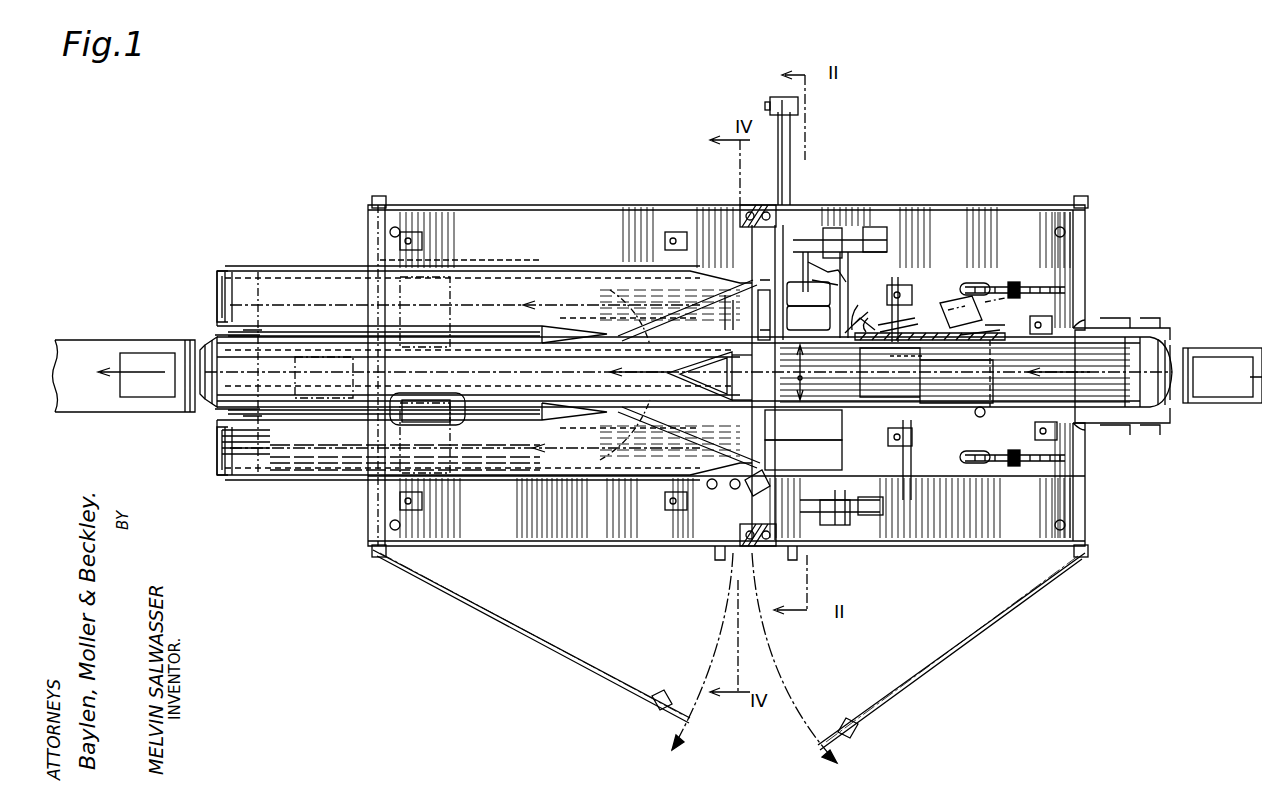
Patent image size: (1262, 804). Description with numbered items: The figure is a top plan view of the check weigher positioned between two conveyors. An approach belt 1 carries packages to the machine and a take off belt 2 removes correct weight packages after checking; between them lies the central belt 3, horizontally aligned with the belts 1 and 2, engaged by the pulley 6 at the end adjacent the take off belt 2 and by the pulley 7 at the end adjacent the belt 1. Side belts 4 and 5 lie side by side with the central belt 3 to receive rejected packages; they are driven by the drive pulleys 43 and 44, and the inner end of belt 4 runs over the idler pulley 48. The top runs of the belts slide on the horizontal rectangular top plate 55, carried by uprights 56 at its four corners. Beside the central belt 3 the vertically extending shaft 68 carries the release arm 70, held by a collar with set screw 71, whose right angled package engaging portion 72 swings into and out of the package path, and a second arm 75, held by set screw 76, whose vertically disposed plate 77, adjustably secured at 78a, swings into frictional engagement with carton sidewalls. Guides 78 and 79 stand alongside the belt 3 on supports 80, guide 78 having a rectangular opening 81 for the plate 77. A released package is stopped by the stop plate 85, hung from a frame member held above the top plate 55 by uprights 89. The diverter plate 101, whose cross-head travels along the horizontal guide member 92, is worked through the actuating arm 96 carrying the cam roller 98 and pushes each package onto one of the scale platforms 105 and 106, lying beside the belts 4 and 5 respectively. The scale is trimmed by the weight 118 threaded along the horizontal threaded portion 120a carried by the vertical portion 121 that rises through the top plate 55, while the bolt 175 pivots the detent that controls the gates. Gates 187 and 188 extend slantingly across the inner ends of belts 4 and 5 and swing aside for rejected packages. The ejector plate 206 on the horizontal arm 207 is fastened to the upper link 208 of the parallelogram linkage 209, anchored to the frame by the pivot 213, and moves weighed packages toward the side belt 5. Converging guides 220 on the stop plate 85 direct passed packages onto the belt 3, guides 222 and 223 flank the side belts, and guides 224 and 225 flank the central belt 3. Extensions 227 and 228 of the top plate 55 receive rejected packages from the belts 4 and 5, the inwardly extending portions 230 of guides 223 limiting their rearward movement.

The belt 1 is at (1198, 348).
The take off belt 2 is at (122, 340).
The central belt 3 is at (428, 368).
The side belt 4 is at (498, 304).
The side belt 5 is at (498, 453).
The pulley 6 is at (214, 400).
The pulley 7 is at (1170, 406).
The drive pulley 43 is at (373, 274).
The drive pulley 44 is at (400, 462).
The idler pulley 48 is at (726, 292).
The top plate 55 is at (494, 236).
The uprights 56 is at (398, 205).
The vertically extending shaft 68 is at (898, 322).
The release arm 70 is at (872, 317).
The set screw 71 is at (865, 306).
The package engaging portion 72 is at (848, 334).
The second arm 75 is at (972, 326).
The set screw 76 is at (948, 326).
The vertically disposed plate 77 is at (1000, 341).
The guide 78 is at (1078, 334).
The adjustable securing means 78a is at (952, 402).
The guide 79 is at (998, 405).
The supports 80 is at (908, 298).
The rectangular opening 81 is at (930, 368).
The stop plate 85 is at (743, 361).
The uprights 89 is at (755, 205).
The guide member 92 is at (743, 394).
The actuating arm 96 is at (792, 167).
The roller 98 is at (768, 290).
The diverter plate 101 is at (808, 318).
The scale platform 105 is at (808, 294).
The scale platform 106 is at (803, 455).
The adjustable weight 118 is at (1020, 290).
The rack 120a is at (1062, 290).
The vertical portion 121 is at (970, 283).
The bolt 175 is at (803, 427).
The gate 187 is at (640, 325).
The gate 188 is at (660, 420).
The ejector plate 206 is at (827, 278).
The arm 207 is at (895, 285).
The link 208 is at (852, 230).
The parallelogram linkage 209 is at (845, 526).
The pivot 213 is at (778, 486).
The angularly disposed guides 220 is at (702, 352).
The guides 222 is at (248, 326).
The guides 223 is at (258, 272).
The guide 224 is at (293, 340).
The guide 225 is at (305, 413).
The extension 227 is at (318, 268).
The extension 228 is at (253, 455).
The inwardly extending portions 230 is at (219, 278).